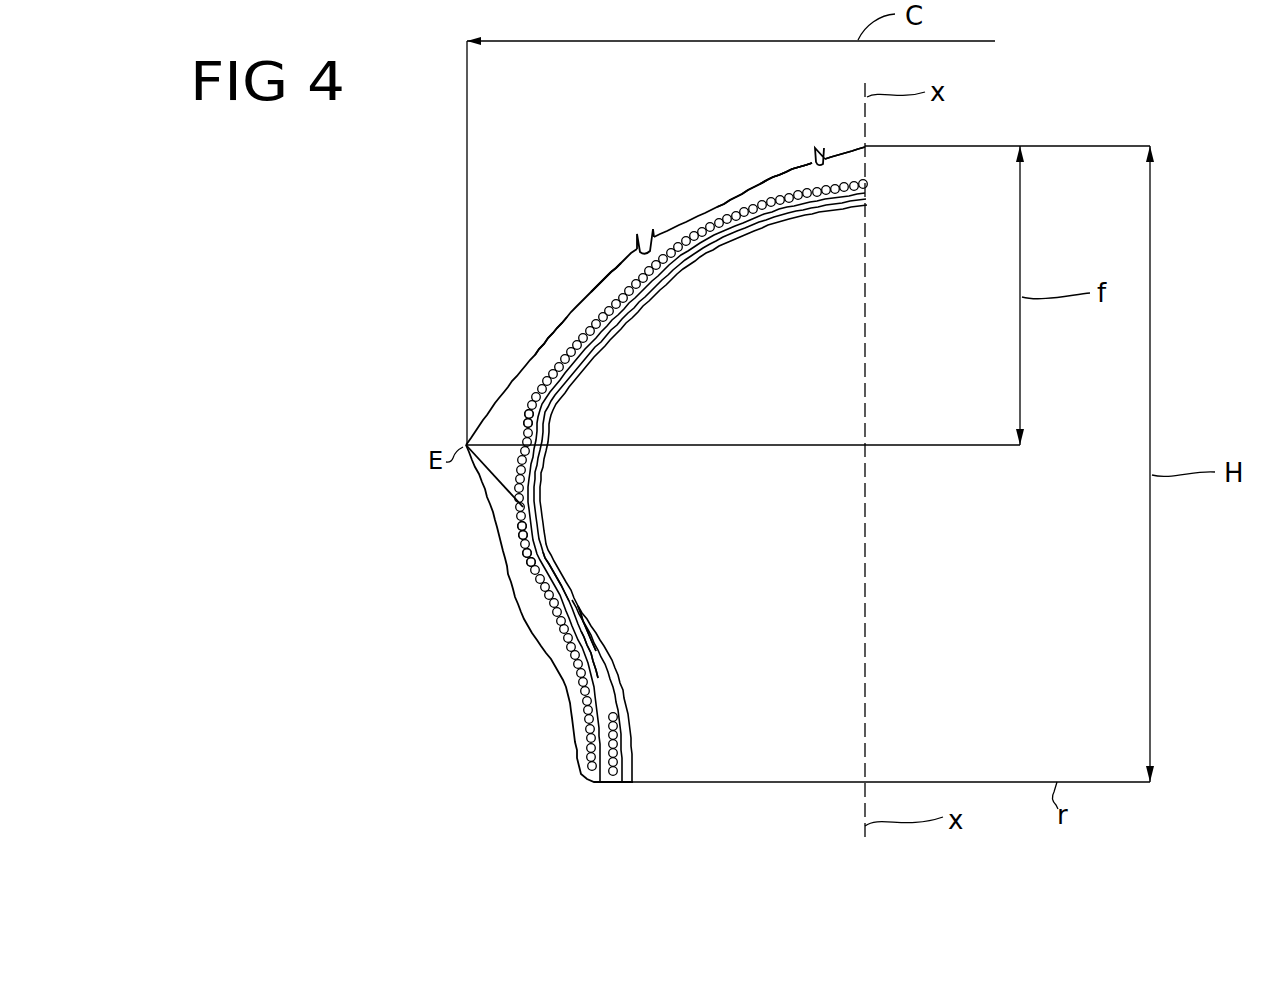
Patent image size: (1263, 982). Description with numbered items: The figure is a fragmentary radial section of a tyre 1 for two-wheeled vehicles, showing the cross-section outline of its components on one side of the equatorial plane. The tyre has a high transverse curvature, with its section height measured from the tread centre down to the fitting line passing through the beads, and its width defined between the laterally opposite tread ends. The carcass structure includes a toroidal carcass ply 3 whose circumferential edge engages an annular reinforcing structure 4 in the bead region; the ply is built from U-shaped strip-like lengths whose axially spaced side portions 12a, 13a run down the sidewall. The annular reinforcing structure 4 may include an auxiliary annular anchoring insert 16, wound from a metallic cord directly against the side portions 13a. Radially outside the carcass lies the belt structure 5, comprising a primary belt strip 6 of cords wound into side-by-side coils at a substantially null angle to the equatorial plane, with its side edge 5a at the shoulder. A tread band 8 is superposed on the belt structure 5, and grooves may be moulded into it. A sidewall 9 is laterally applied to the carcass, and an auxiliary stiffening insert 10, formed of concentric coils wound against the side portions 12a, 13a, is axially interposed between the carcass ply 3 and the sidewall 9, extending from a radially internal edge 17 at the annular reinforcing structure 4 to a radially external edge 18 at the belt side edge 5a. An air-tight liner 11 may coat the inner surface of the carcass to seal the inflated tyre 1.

The tyre 1 is at (428, 331).
The carcass ply 3 is at (708, 262).
The annular reinforcing structure 4 is at (613, 795).
The belt structure 5 is at (876, 182).
The side edge of the belt structure 5a is at (528, 403).
The primary belt strip 6 is at (715, 220).
The tread band 8 is at (772, 180).
The sidewall 9 is at (528, 615).
The auxiliary stiffening insert 10 is at (510, 572).
The liner 11 is at (558, 580).
The side portion 12a is at (610, 670).
The side portion 13a is at (573, 650).
The auxiliary annular anchoring insert 16 is at (588, 740).
The radially internal edge 17 is at (573, 675).
The radially external edge 18 is at (526, 414).